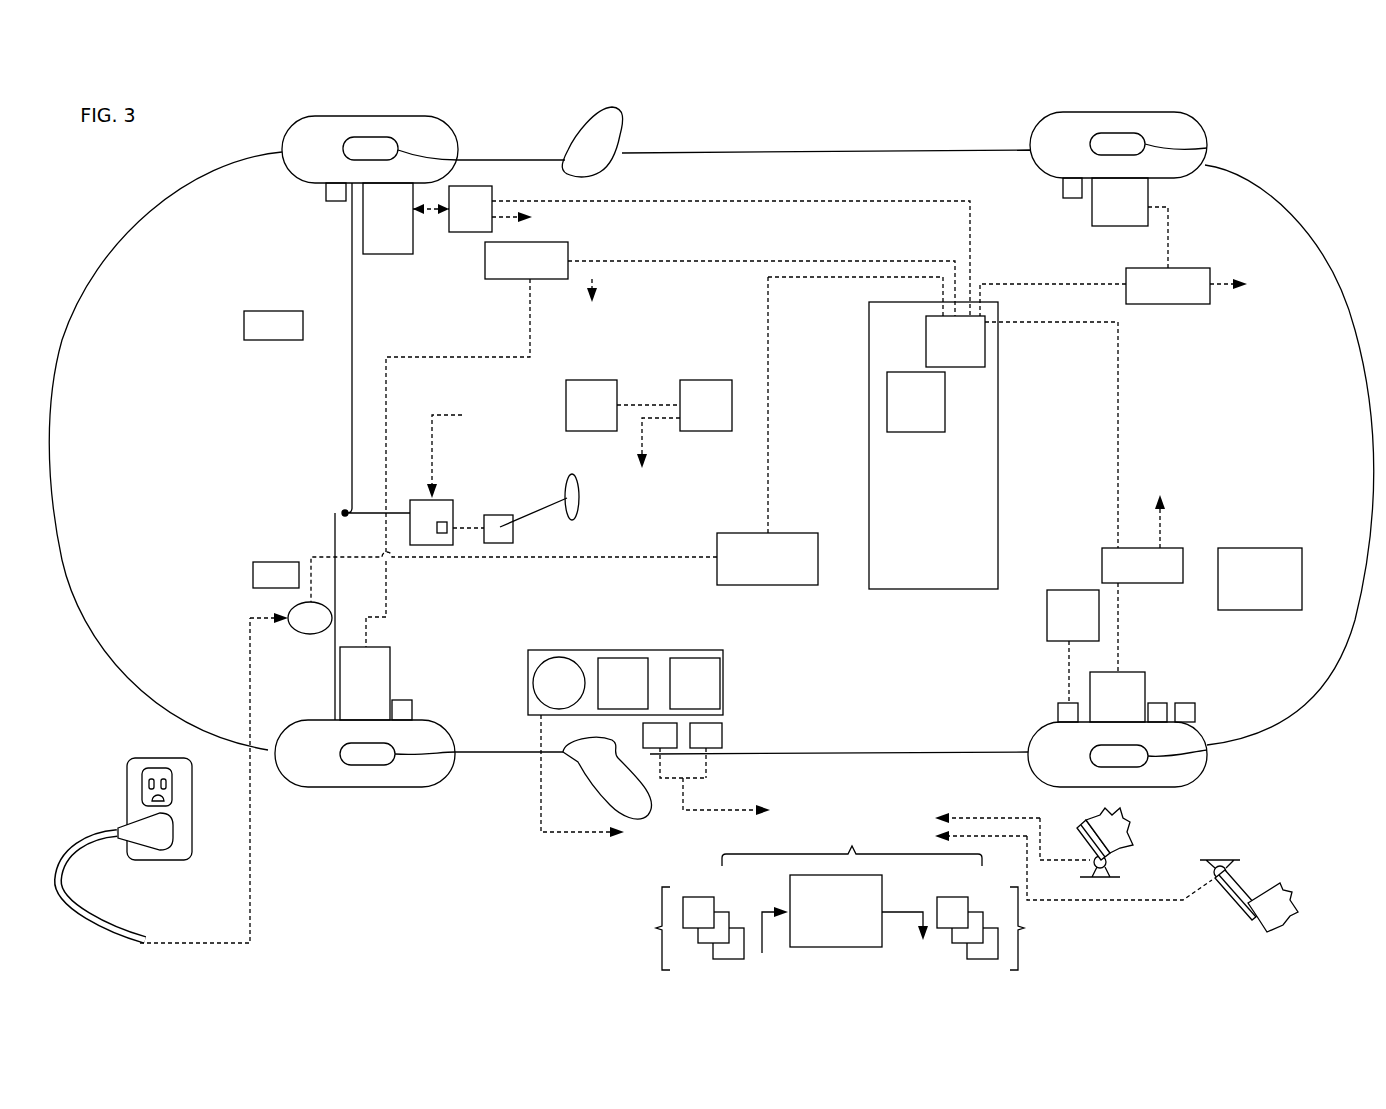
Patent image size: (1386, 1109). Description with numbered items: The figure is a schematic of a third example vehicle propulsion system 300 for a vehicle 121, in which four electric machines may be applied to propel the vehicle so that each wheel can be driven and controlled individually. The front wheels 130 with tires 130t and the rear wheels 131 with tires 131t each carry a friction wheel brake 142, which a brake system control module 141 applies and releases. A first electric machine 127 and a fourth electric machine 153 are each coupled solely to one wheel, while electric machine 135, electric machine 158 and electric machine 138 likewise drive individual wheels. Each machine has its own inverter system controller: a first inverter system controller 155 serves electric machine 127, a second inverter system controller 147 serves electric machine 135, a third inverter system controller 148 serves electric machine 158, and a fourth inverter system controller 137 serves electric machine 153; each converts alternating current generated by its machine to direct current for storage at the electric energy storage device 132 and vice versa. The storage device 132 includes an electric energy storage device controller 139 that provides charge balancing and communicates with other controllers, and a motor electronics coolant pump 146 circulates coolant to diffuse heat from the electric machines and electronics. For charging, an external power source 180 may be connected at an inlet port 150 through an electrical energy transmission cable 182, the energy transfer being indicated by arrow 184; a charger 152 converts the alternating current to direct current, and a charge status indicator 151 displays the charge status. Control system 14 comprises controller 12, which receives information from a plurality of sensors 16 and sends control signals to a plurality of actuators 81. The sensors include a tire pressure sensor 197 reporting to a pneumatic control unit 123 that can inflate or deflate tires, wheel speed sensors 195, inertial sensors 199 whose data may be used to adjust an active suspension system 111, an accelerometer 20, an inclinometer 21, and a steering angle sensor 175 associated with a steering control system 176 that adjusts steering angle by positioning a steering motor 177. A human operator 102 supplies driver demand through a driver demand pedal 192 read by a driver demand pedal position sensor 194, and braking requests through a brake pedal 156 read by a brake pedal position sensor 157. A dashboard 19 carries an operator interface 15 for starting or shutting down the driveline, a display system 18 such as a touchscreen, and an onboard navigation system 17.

The vehicle propulsion system 300 is at (860, 122).
The vehicle 121 is at (1330, 750).
The front wheels 130 is at (458, 148).
The tire 130t is at (383, 116).
The rear wheels 131 is at (1207, 150).
The tire 131t is at (1163, 113).
The friction wheel brakes 142 is at (336, 201).
The second electric machine 135 is at (406, 218).
The second inverter system controller 147 is at (709, 251).
The third inverter system controller 148 is at (660, 444).
The motor electronics coolant pump 146 is at (273, 325).
The first electric machine 127 is at (1130, 223).
The first inverter system controller 155 is at (1127, 293).
The second electric machine 138 is at (943, 412).
The electric energy storage device controller 139 is at (916, 402).
The electric energy storage device 132 is at (943, 433).
The active suspension system 111 is at (623, 405).
The inertial sensors 199 is at (680, 448).
The steering control system 176 is at (432, 500).
The steering motor 177 is at (442, 522).
The steering angle sensor 175 is at (498, 515).
The charger 152 is at (564, 439).
The fourth inverter system controller 137 is at (1142, 560).
The brake system control module 141 is at (1260, 579).
The charge status indicator 151 is at (276, 575).
The inlet port 150 is at (312, 634).
The electric machine 158 is at (365, 683).
The dashboard 19 is at (656, 650).
The operator interface 15 is at (559, 683).
The display system 18 is at (623, 683).
The onboard navigation system 17 is at (695, 683).
The inclinometer 21 is at (706, 769).
The accelerometer 20 is at (706, 750).
The pneumatic control unit 123 is at (1073, 646).
The tire pressure sensor 197 is at (1072, 700).
The fourth electric machine 153 is at (1117, 697).
The wheel speed sensors 195 is at (1158, 703).
The control system 14 is at (846, 884).
The controller 12 is at (845, 914).
The sensors 16 is at (661, 928).
The actuators 81 is at (1025, 928).
The power source 180 is at (127, 790).
The electrical energy transmission cable 182 is at (62, 855).
The arrow 184 is at (190, 943).
The driver demand pedal 192 is at (1085, 845).
The driver demand pedal position sensor 194 is at (1108, 862).
The human operator 102 is at (1115, 830).
The brake pedal 156 is at (1245, 918).
The brake pedal position sensor 157 is at (1208, 868).